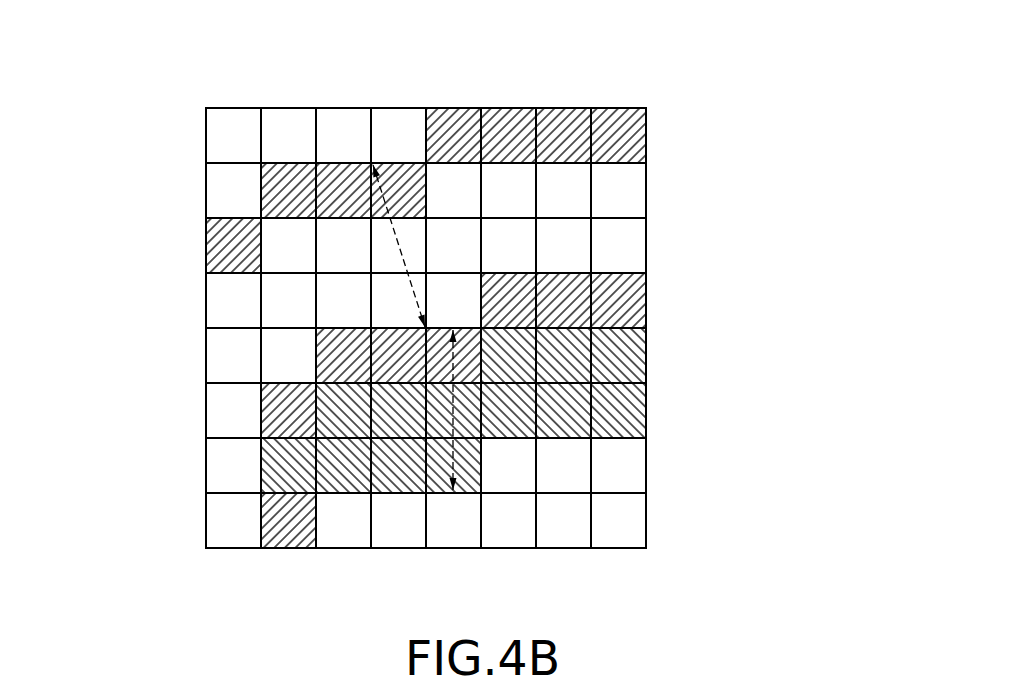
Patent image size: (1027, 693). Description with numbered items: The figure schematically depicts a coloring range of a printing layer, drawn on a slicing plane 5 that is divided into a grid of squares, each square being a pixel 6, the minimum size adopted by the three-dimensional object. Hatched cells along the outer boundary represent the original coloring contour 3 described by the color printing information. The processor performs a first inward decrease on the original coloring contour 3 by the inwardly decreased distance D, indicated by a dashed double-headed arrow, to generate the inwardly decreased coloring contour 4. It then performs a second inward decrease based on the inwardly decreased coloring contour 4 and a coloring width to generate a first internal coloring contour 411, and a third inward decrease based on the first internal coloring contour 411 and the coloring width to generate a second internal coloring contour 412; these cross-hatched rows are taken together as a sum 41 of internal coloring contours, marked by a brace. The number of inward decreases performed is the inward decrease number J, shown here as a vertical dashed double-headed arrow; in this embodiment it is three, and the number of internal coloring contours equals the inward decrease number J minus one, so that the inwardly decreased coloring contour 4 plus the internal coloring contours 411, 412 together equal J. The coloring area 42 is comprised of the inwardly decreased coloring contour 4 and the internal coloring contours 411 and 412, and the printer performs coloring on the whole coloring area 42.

The original coloring contour 3 is at (457, 102).
The inwardly decreased coloring contour 4 is at (660, 294).
The sum of internal coloring contours 41 is at (602, 409).
The first internal coloring contour 411 is at (647, 333).
The second internal coloring contour 412 is at (647, 407).
The coloring area 42 is at (248, 413).
The slicing plane 5 is at (648, 522).
The pixel 6 is at (632, 480).
The inwardly decreased distance D is at (398, 247).
The inward decrease number J is at (453, 413).